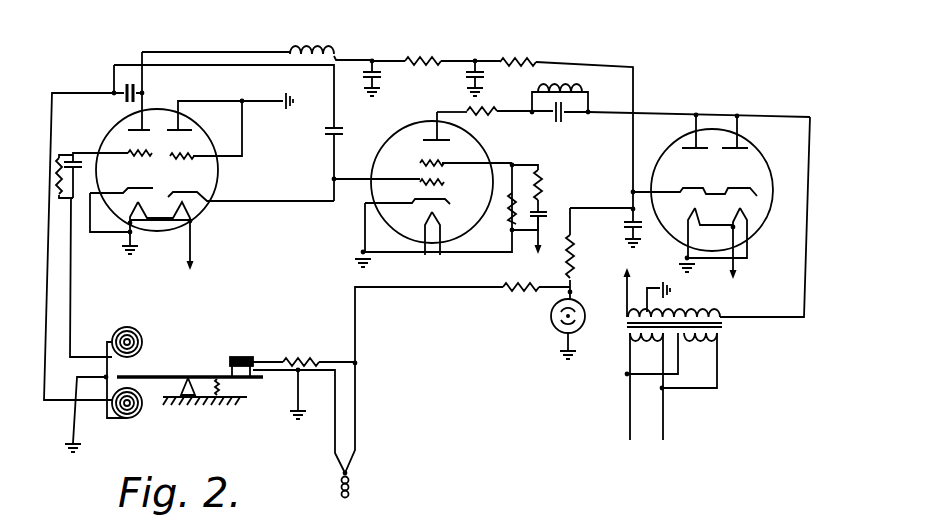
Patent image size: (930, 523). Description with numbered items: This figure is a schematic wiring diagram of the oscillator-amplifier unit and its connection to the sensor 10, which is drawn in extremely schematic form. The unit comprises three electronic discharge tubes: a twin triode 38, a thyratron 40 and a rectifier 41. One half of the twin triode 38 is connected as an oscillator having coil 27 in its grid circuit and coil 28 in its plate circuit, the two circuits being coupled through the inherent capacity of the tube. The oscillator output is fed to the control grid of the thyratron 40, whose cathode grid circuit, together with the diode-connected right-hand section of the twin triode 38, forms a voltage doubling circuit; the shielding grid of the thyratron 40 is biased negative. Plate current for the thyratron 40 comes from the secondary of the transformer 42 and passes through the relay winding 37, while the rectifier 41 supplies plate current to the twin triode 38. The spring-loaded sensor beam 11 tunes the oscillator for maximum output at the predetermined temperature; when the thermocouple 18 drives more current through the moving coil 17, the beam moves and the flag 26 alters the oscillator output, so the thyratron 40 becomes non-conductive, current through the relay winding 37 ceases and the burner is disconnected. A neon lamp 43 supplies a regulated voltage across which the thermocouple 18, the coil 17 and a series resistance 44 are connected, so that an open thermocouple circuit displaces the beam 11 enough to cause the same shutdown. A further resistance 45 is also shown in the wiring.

The sensor 10 is at (204, 360).
The sensor beam 11 is at (157, 373).
The moving coil 17 is at (228, 354).
The thermocouple 18 is at (348, 476).
The flag 26 is at (127, 372).
The grid circuit coil 27 is at (130, 327).
The plate circuit coil 28 is at (143, 406).
The relay winding 37 is at (560, 80).
The twin triode 38 is at (207, 206).
The thyratron 40 is at (482, 143).
The rectifier 41 is at (780, 158).
The transformer 42 is at (734, 329).
The neon lamp 43 is at (584, 321).
The resistance 44 is at (303, 359).
The resistor 45 is at (538, 298).